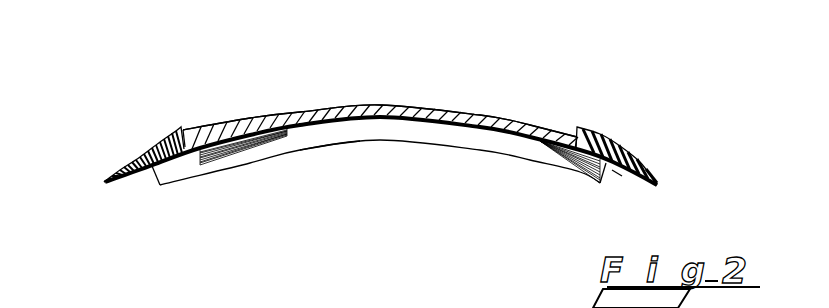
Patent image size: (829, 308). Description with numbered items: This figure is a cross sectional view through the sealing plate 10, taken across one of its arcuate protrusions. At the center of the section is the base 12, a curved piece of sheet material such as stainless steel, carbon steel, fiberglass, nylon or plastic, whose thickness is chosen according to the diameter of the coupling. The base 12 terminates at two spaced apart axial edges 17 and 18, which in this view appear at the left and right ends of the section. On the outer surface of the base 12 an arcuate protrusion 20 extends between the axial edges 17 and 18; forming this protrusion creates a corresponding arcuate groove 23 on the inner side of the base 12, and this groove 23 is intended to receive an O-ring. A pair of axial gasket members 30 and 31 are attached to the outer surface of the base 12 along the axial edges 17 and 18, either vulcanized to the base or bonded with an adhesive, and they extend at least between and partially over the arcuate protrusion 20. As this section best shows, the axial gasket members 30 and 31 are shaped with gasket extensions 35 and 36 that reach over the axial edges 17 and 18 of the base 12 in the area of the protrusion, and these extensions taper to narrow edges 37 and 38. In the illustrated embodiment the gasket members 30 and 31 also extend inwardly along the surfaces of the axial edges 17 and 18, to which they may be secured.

The sealing plate 10 is at (466, 178).
The base 12 is at (307, 113).
The axial edge 17 is at (153, 185).
The axial edge 18 is at (607, 180).
The arcuate protrusion 20 is at (405, 102).
The arcuate groove 23 is at (330, 143).
The axial gasket member 30 is at (148, 126).
The axial gasket member 31 is at (607, 118).
The gasket extension 35 is at (117, 183).
The gasket extension 36 is at (618, 173).
The narrow edge 37 is at (107, 180).
The narrow edge 38 is at (657, 184).